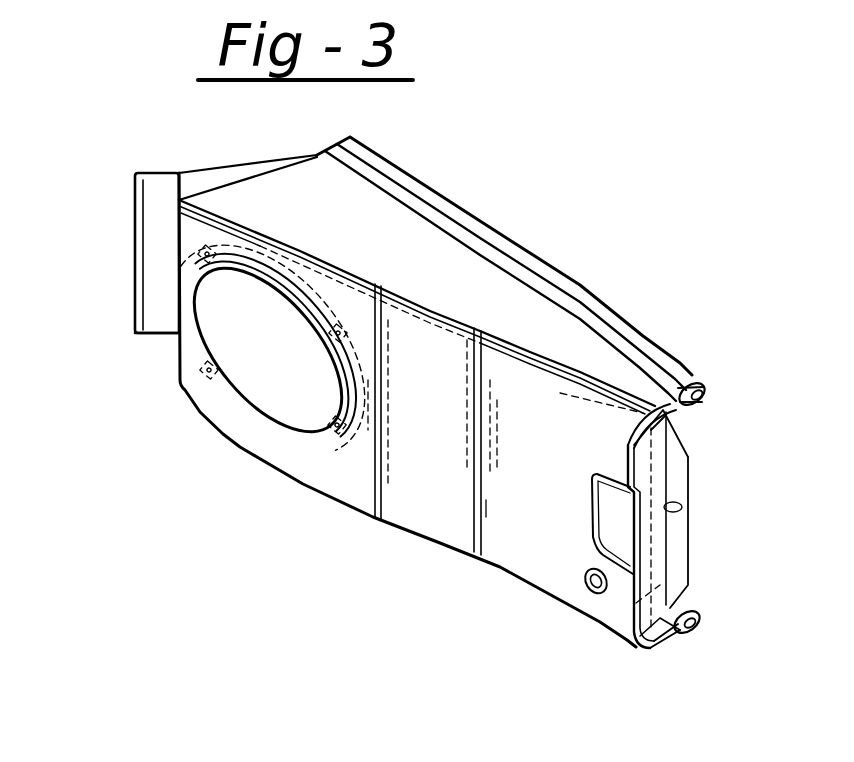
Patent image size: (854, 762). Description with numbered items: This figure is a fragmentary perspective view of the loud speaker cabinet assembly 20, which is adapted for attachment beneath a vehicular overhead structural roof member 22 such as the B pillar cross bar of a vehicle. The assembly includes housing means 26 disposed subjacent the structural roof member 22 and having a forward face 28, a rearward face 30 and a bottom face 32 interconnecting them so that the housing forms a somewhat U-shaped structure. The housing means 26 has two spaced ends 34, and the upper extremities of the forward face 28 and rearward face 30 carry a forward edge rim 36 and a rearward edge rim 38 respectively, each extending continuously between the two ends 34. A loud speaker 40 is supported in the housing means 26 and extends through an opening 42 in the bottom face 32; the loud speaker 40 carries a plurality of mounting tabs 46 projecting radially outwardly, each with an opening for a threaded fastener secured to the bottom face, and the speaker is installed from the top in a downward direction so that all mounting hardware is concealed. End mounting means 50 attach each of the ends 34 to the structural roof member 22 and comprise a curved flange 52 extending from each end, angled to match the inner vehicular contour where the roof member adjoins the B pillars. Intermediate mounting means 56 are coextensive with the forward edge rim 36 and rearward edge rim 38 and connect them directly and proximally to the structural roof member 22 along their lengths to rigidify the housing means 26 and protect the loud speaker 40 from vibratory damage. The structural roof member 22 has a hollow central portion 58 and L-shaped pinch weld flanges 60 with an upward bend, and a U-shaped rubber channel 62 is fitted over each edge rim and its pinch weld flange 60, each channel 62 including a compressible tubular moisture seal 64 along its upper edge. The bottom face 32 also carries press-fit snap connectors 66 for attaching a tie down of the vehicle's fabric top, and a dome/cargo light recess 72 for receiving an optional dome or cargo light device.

The loud speaker cabinet assembly 20 is at (542, 220).
The structural roof member 22 is at (693, 474).
The housing means 26 is at (396, 535).
The forward face 28 is at (434, 251).
The rearward face 30 is at (668, 643).
The bottom face 32 is at (525, 553).
The ends 34 is at (135, 273).
The forward edge rim 36 is at (682, 390).
The rearward edge rim 38 is at (687, 636).
The loud speaker 40 is at (248, 410).
The opening 42 is at (249, 182).
The mounting tabs 46 is at (200, 252).
The end mounting means 50 is at (133, 342).
The curved flange 52 is at (160, 182).
The intermediate mounting means 56 is at (722, 398).
The hollow central portion 58 is at (682, 508).
The pinch weld flanges 60 is at (688, 432).
The U-shaped rubber channel 62 is at (563, 290).
The compressible moisture seal 64 is at (692, 392).
The press-fit snap connectors 66 is at (590, 587).
The dome/cargo light recess 72 is at (590, 530).